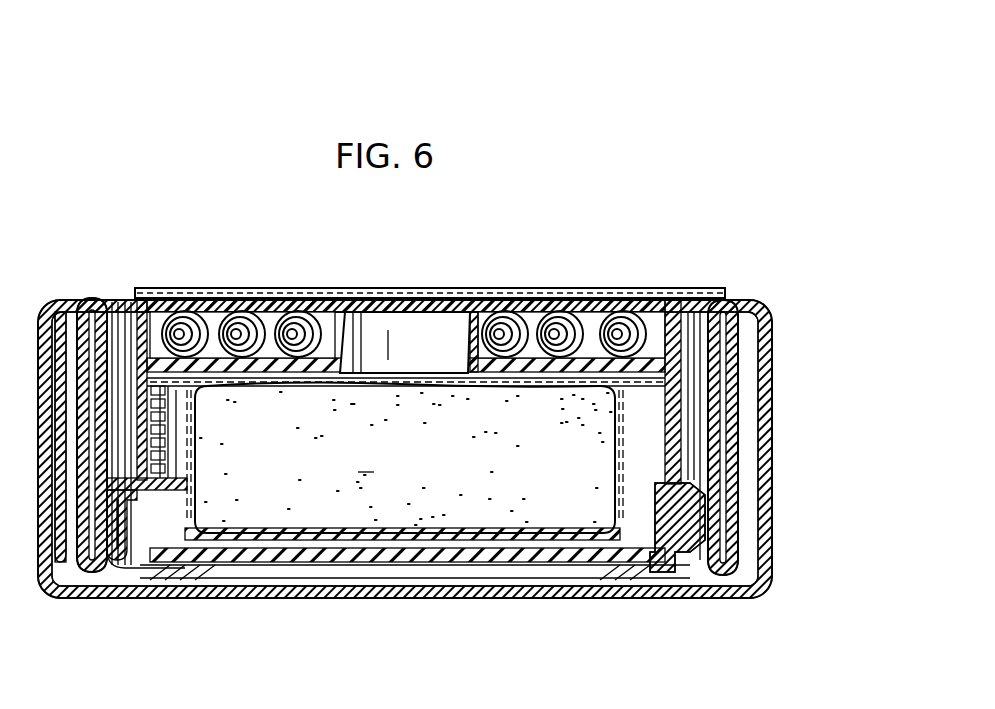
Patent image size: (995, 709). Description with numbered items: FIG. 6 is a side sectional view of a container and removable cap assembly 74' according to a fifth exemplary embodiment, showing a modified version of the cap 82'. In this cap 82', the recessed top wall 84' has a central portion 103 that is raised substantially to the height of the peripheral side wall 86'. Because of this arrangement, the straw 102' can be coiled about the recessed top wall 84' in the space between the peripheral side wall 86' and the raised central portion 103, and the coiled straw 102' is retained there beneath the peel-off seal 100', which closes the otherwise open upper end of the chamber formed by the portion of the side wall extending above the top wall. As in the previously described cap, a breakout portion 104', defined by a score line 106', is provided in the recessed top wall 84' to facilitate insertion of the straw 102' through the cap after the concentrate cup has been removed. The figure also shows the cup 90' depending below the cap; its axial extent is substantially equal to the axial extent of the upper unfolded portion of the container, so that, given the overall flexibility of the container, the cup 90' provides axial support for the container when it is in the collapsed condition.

The container assembly 74' is at (470, 449).
The cap 82' is at (735, 416).
The recessed top wall 84' is at (406, 455).
The peripheral side wall 86' is at (93, 404).
The cup 90' is at (422, 562).
The peel-off seal 100' is at (236, 339).
The straw 102' is at (579, 341).
The central portion 103 is at (470, 298).
The breakout portion 104' is at (423, 286).
The score line 106' is at (332, 308).